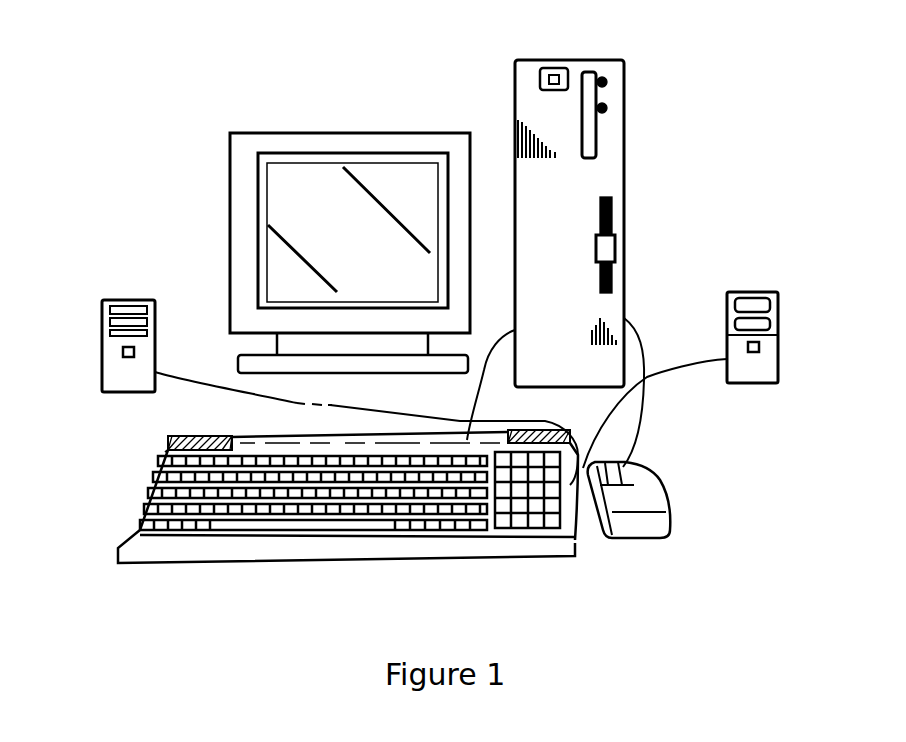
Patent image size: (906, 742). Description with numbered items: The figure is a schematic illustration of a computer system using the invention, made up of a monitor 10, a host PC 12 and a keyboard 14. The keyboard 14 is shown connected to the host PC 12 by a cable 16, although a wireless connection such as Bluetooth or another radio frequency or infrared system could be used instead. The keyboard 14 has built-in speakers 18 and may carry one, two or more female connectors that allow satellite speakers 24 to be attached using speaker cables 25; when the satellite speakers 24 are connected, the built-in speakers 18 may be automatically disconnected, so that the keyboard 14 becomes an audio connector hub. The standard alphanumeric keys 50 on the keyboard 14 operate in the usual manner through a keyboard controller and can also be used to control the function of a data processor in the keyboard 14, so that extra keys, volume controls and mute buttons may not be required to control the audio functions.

The monitor 10 is at (333, 123).
The host PC 12 is at (627, 165).
The keyboard 14 is at (460, 537).
The cable 16 is at (490, 383).
The built-in speakers 18 is at (160, 450).
The satellite speakers 24 is at (105, 302).
The speaker cables 25 is at (285, 395).
The alphanumeric keys 50 is at (313, 520).